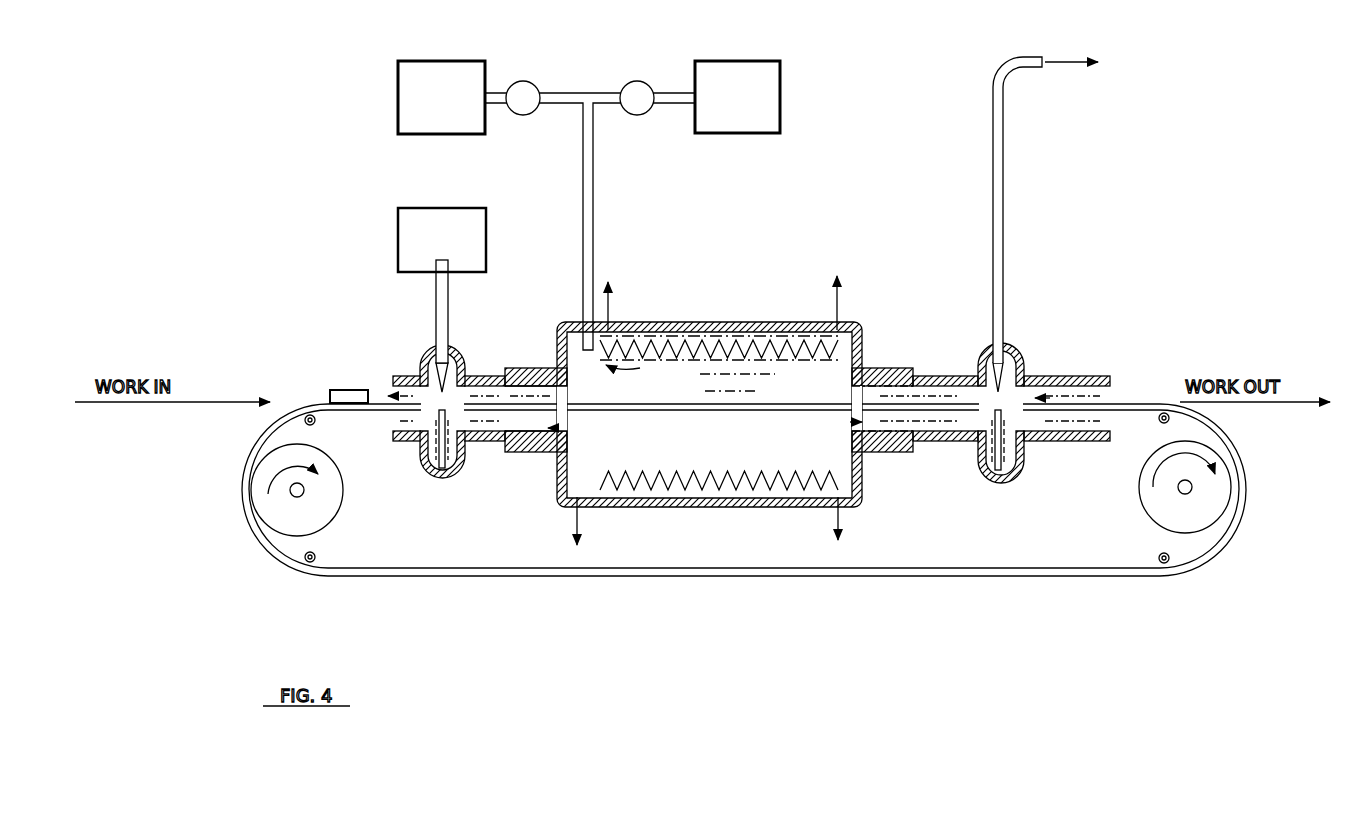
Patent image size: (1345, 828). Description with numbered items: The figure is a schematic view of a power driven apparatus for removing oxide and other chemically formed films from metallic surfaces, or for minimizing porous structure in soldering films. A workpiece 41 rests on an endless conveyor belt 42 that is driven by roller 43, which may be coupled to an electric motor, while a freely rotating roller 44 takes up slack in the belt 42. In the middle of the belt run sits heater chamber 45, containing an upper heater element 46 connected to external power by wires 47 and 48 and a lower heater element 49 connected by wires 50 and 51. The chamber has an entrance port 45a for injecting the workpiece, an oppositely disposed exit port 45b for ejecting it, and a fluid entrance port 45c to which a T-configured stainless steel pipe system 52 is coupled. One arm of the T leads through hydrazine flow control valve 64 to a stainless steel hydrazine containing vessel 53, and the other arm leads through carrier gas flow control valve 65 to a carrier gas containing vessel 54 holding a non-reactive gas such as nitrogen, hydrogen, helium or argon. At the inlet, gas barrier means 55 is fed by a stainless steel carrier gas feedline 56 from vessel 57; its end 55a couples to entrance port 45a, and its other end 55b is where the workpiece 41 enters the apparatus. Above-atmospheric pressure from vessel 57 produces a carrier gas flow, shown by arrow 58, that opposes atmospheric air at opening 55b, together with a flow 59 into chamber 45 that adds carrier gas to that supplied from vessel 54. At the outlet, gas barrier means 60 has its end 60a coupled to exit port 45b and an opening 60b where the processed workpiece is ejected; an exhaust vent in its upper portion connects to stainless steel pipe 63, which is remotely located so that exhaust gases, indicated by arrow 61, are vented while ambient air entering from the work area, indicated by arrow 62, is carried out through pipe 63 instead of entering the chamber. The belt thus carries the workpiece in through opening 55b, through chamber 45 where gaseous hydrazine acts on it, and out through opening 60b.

The workpiece 41 is at (330, 394).
The endless conveyor belt 42 is at (475, 568).
The roller 43 is at (312, 508).
The roller 44 is at (1172, 515).
The heater chamber 45 is at (763, 331).
The entrance port 45a is at (557, 430).
The exit port 45b is at (848, 423).
The fluid entrance port 45c is at (735, 372).
The upper heater element 46 is at (700, 338).
The wire 47 is at (612, 292).
The wire 48 is at (841, 272).
The lower heater element 49 is at (705, 498).
The wire 50 is at (836, 532).
The wire 51 is at (575, 540).
The T-configured stainless steel pipe system 52 is at (595, 212).
The hydrazine containing vessel 53 is at (765, 100).
The carrier gas containing vessel 54 is at (423, 95).
The gas barrier means 55 is at (419, 398).
The end of gas barrier means 55a is at (560, 398).
The end of gas barrier means 55b is at (410, 424).
The carrier gas feedline 56 is at (446, 296).
The vessel 57 is at (452, 228).
The arrow 58 is at (380, 392).
The flow 59 is at (495, 386).
The gas barrier means 60 is at (1016, 352).
The end of gas barrier means 60a is at (876, 447).
The opening 60b is at (1120, 428).
The arrow 61 is at (975, 378).
The arrow 62 is at (1035, 382).
The stainless steel pipe 63 is at (998, 185).
The hydrazine flow control valve 64 is at (640, 112).
The carrier gas flow control valve 65 is at (538, 102).